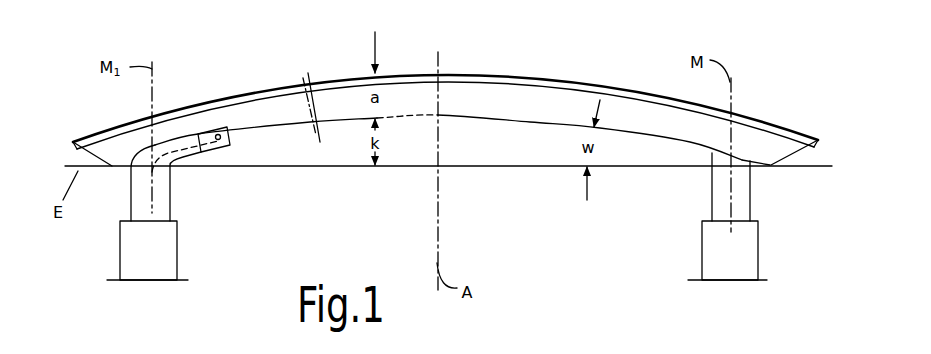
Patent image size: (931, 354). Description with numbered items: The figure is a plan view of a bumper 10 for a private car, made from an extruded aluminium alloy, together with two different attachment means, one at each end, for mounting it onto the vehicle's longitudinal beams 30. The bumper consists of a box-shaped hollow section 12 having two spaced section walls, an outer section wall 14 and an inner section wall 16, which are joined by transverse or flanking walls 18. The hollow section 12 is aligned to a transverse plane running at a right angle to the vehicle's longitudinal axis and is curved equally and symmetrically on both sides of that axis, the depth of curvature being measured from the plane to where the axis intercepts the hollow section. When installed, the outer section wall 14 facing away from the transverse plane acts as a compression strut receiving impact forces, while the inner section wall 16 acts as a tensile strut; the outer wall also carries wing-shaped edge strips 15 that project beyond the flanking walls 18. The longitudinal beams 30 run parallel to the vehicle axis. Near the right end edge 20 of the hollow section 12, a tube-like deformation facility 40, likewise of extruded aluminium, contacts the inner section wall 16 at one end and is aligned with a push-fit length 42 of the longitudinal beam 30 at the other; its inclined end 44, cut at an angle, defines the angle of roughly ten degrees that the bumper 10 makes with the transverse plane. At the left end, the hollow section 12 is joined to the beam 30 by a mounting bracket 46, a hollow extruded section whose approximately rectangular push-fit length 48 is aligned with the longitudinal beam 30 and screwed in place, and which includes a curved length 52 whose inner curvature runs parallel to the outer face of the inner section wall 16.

The bumper 10 is at (203, 75).
The box-shaped hollow section 12 is at (296, 116).
The outer section wall 14 is at (538, 80).
The edge strip 15 is at (577, 343).
The inner section wall 16 is at (527, 122).
The transverse wall 18 is at (667, 127).
The right end edge 20 is at (795, 152).
The longitudinal beam 30 is at (157, 264).
The deformation facility 40 is at (725, 210).
The push-fit length 42 is at (711, 222).
The inclined end 44 is at (740, 160).
The mounting bracket 46 is at (180, 194).
The push-fit length 48 is at (155, 213).
The curved length 52 is at (135, 147).